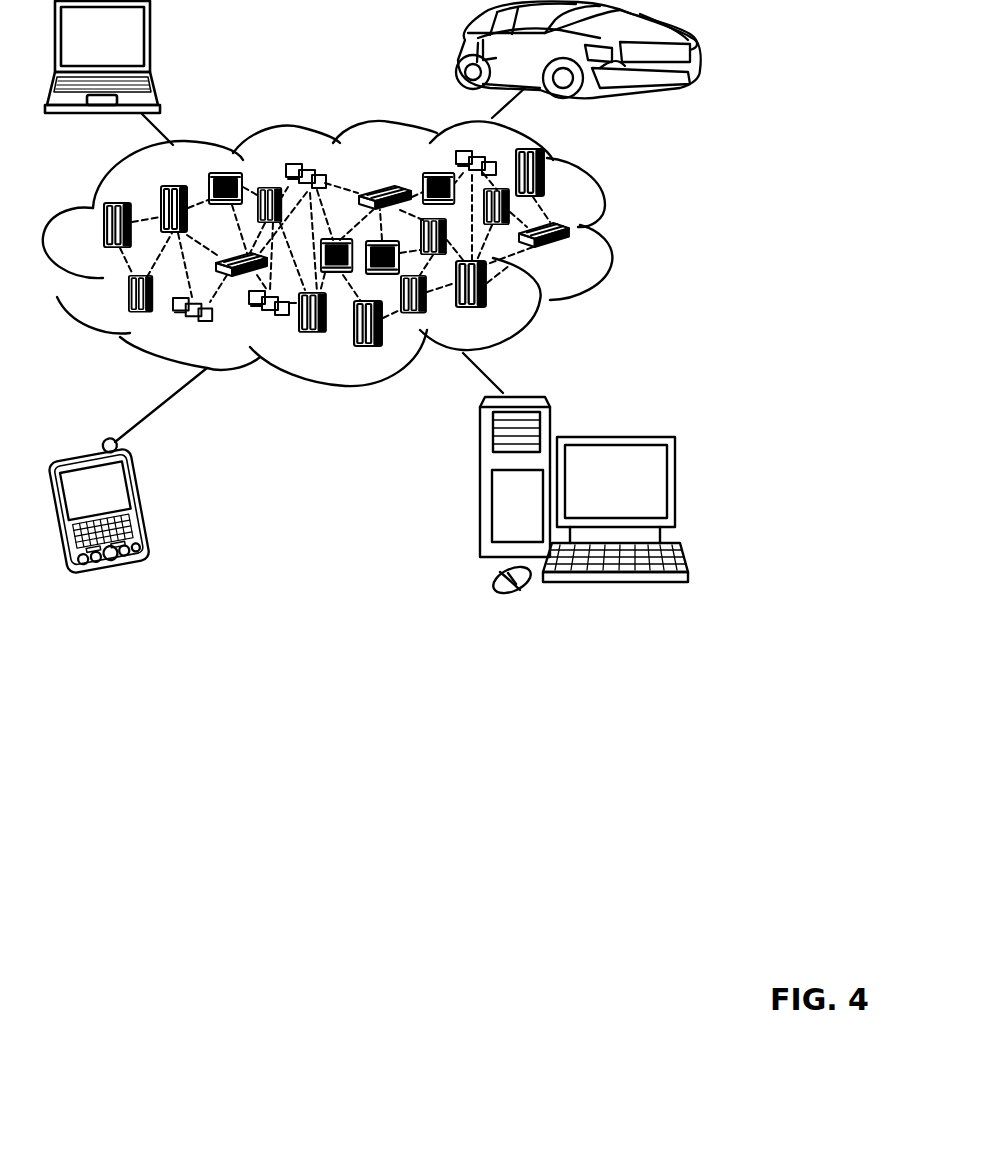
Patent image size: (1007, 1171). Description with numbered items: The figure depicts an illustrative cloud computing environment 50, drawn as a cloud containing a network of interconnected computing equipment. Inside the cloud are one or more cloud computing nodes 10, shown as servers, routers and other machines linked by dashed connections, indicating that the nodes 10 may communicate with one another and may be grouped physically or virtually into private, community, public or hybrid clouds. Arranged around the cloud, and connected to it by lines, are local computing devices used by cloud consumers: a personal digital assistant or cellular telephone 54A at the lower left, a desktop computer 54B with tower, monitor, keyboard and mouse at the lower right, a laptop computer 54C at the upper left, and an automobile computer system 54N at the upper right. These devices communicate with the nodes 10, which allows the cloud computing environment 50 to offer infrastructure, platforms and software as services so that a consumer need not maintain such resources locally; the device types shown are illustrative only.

The cloud computing node 10 is at (580, 257).
The cloud computing environment 50 is at (613, 236).
The personal digital assistant or cellular telephone 54A is at (143, 502).
The desktop computer 54B is at (622, 422).
The laptop computer 54C is at (150, 42).
The automobile computer system 54N is at (458, 50).